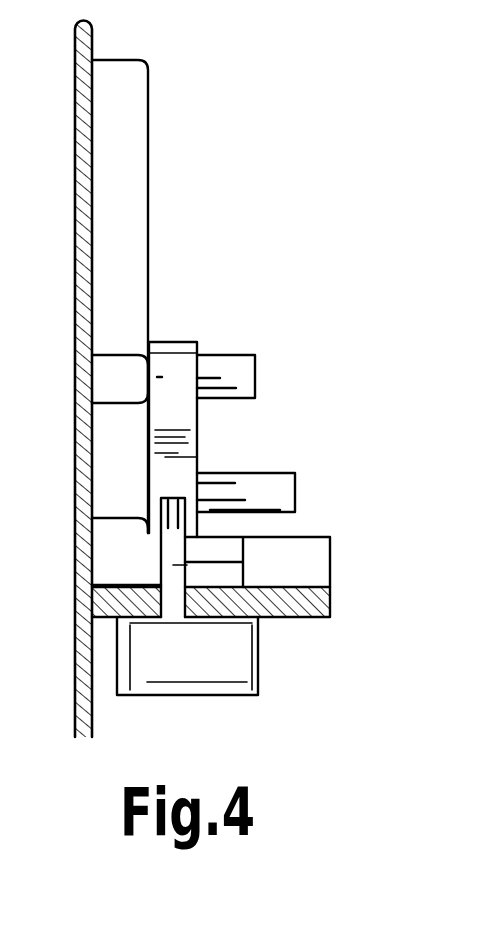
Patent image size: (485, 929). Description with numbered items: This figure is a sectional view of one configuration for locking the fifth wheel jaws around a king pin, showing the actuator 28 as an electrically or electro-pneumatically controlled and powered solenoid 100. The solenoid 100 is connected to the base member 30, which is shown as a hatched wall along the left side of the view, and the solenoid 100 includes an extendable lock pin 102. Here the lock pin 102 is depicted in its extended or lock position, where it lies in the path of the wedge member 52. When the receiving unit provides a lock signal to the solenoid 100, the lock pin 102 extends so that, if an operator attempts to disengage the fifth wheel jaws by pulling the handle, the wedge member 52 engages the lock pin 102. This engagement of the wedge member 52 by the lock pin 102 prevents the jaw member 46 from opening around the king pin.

The base member 30 is at (74, 294).
The jaw member 46 is at (175, 377).
The wedge member 52 is at (183, 457).
The lock pin 102 is at (247, 565).
The actuator 28 is at (285, 660).
The solenoid 100 is at (195, 673).